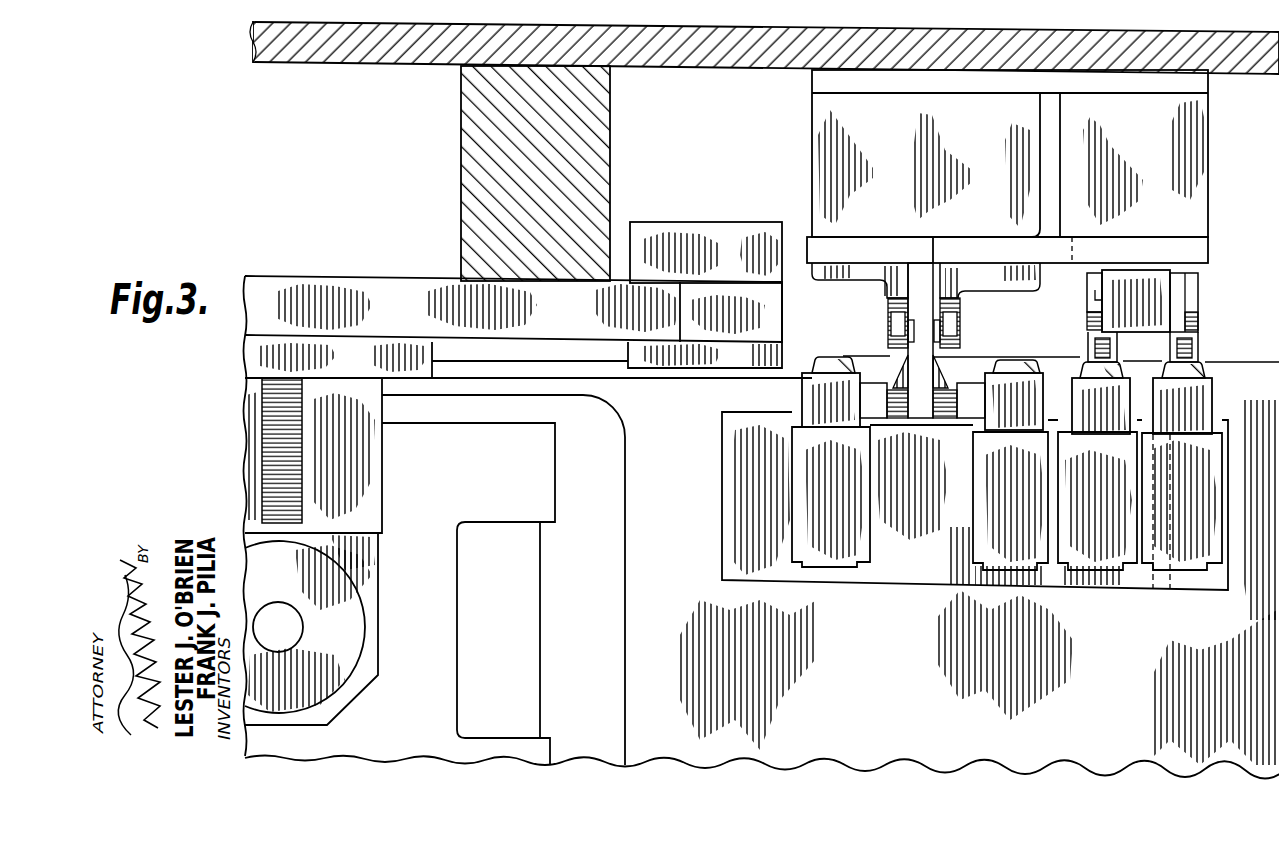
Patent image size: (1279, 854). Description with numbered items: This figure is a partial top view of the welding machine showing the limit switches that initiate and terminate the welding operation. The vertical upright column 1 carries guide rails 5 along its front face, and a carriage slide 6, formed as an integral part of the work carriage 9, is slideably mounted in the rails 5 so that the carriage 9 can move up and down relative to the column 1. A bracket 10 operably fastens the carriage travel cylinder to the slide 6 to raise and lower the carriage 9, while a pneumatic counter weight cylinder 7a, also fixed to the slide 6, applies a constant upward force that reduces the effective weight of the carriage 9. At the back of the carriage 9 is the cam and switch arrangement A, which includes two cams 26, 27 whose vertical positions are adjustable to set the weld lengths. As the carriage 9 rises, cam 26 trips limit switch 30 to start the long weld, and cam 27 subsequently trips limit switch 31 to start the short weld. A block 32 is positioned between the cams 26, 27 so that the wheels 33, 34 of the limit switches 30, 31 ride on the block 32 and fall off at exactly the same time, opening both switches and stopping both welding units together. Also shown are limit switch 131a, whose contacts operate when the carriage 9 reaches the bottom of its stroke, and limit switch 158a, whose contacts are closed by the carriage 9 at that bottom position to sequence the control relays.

The work carriage 9 is at (416, 50).
The carriage slide 6 is at (377, 297).
The guide rails 5 is at (768, 312).
The bracket 10 is at (370, 452).
The vertical upright column 1 is at (610, 568).
The pneumatic counter weight cylinder 7a is at (350, 603).
The limit switch 131a is at (837, 557).
The limit switch 158a is at (1023, 558).
The block 32 is at (1148, 278).
The cam 27 is at (1093, 285).
The cam 26 is at (1212, 320).
The cam and switch arrangement A is at (1158, 270).
The wheel of limit switch 34 is at (1093, 335).
The limit switch 31 is at (1078, 383).
The wheel of limit switch 33 is at (1183, 342).
The limit switch 30 is at (1203, 398).